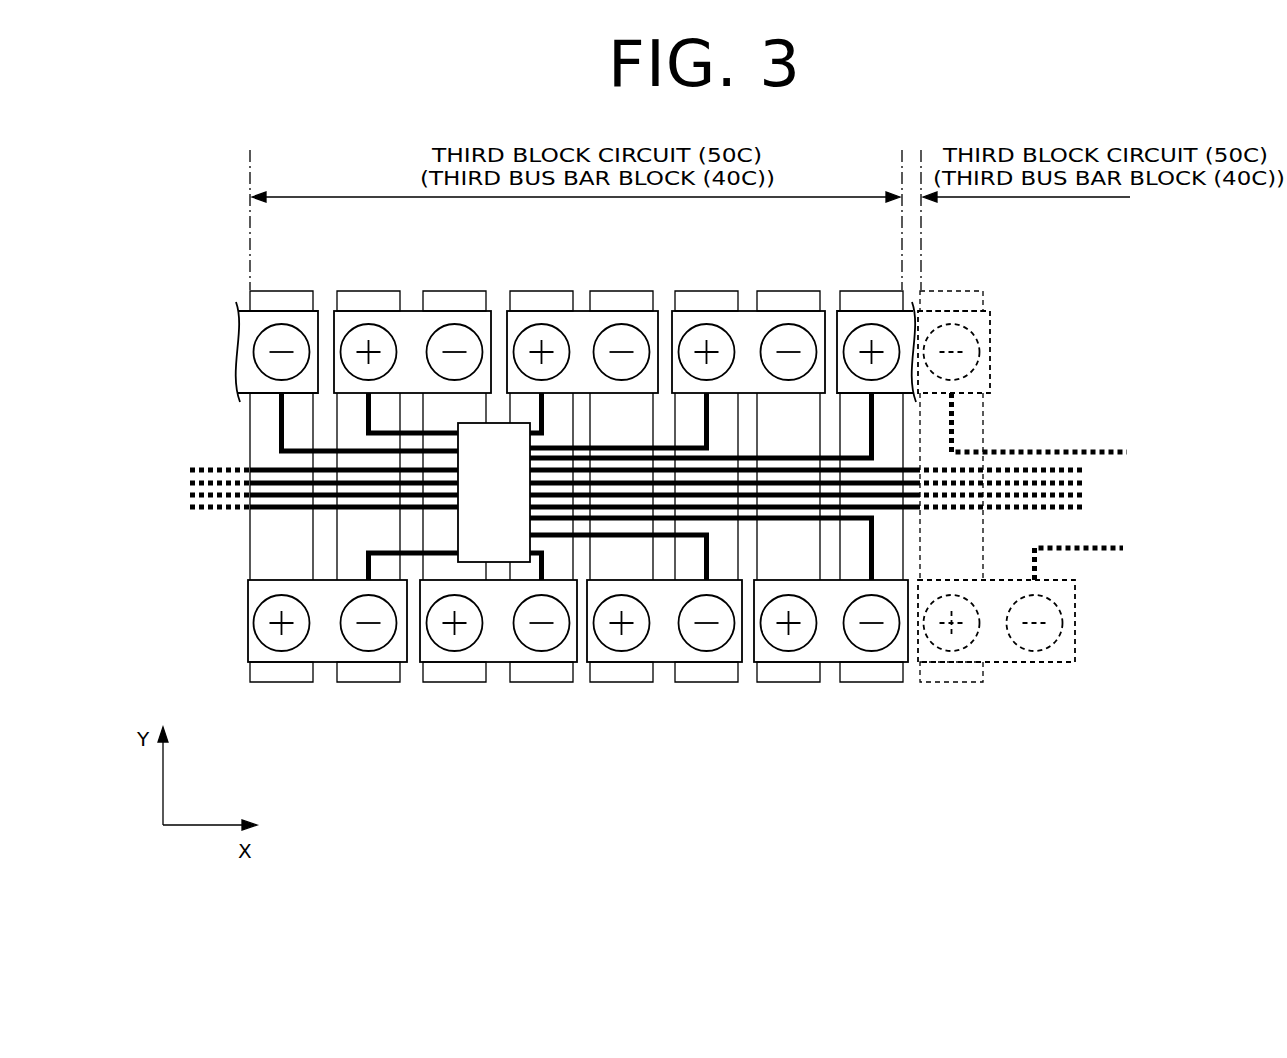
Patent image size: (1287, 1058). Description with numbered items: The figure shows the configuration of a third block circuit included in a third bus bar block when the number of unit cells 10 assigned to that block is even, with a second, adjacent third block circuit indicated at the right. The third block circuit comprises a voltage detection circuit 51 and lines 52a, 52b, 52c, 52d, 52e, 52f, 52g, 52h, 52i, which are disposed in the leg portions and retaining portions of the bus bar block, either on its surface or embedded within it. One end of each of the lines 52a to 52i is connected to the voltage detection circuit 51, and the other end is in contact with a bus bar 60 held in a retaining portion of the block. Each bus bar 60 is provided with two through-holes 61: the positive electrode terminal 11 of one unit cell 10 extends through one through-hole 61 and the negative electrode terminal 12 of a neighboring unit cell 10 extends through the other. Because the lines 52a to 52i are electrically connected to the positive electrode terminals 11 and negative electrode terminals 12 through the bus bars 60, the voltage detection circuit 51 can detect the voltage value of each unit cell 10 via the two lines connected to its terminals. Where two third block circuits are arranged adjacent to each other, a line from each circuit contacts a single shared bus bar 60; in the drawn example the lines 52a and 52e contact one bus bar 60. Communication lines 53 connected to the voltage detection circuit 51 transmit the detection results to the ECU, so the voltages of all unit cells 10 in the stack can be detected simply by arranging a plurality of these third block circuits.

The unit cell 10 is at (948, 690).
The positive electrode terminal 11 is at (352, 340).
The negative electrode terminal 12 is at (270, 357).
The voltage detection circuit 51 is at (494, 492).
The line 52a is at (283, 417).
The line 52b is at (380, 410).
The line 52c is at (545, 410).
The line 52d is at (710, 410).
The line 52e is at (868, 442).
The line 52f is at (367, 562).
The line 52g is at (545, 555).
The line 52h is at (710, 552).
The line 52i is at (875, 548).
The communication lines 53 is at (187, 467).
The bus bar 60 is at (243, 343).
The through-hole 61 is at (297, 320).